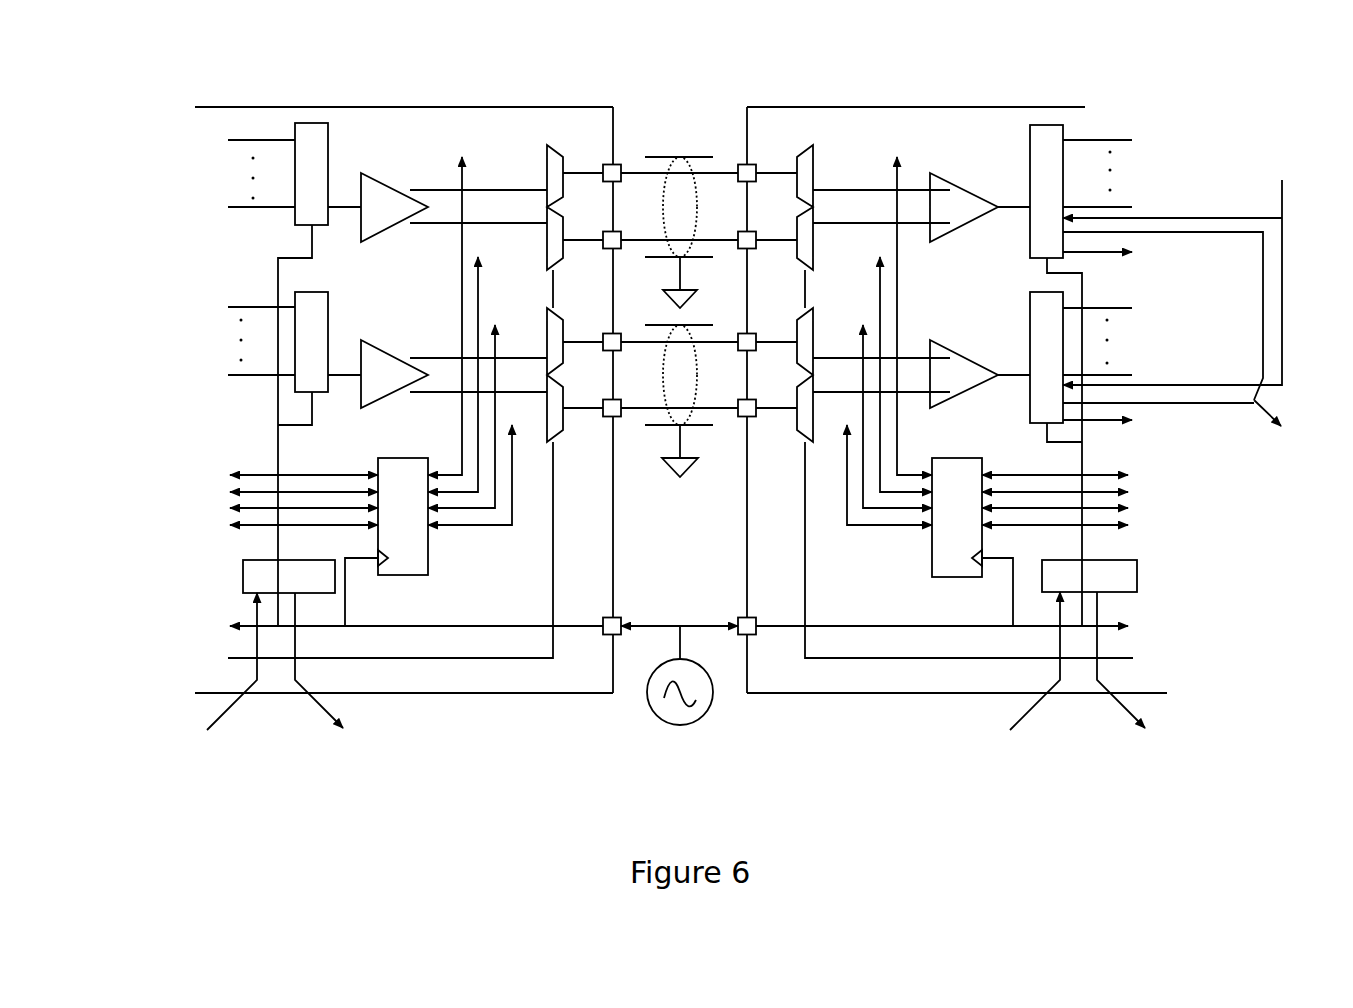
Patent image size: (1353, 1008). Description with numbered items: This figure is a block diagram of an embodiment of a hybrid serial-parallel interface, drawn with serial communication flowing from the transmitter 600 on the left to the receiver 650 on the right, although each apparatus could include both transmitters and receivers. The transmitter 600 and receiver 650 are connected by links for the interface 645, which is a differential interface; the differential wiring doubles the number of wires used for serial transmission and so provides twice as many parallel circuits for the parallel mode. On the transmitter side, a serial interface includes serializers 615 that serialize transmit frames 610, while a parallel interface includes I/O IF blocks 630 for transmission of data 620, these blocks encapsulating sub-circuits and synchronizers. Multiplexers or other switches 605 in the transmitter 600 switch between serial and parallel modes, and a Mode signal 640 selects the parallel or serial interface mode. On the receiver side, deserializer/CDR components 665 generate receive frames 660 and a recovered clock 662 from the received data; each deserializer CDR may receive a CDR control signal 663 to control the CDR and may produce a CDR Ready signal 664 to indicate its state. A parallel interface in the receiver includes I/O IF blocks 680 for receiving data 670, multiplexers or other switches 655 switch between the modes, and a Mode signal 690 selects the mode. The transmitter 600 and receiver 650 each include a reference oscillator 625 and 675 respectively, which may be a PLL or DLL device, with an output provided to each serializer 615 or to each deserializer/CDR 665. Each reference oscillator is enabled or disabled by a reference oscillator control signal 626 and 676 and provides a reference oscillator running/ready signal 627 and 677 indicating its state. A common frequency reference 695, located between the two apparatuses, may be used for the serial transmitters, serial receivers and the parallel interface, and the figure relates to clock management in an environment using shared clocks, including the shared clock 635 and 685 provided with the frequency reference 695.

The transmitter 600 is at (404, 400).
The multiplexers or other switches 605 is at (547, 145).
The transmit frames 610 is at (160, 181).
The serializers 615 is at (312, 123).
The data 620 is at (190, 462).
The reference oscillator 625 is at (290, 561).
The reference oscillator control signal 626 is at (210, 704).
The reference oscillator running/ready signal 627 is at (366, 702).
The I/O IF blocks 630 is at (430, 547).
The shared clock 635 is at (148, 610).
The Mode signal 640 is at (155, 678).
The interface 645 is at (685, 123).
The receiver 650 is at (957, 400).
The multiplexers or other switches 655 is at (813, 145).
The receive frames 660 is at (1200, 171).
The recovered clock 662 is at (1154, 350).
The CDR control signal 663 is at (1194, 262).
The CDR Ready signal 664 is at (1187, 361).
The deserializer/CDR components 665 is at (1063, 125).
The data 670 is at (1203, 512).
The reference oscillator 675 is at (1043, 569).
The reference oscillator control signal 676 is at (1013, 703).
The reference oscillator running/ready signal 677 is at (1168, 701).
The I/O IF blocks 680 is at (922, 545).
The shared clock 685 is at (1215, 612).
The Mode signal 690 is at (1205, 668).
The frequency reference 695 is at (685, 705).